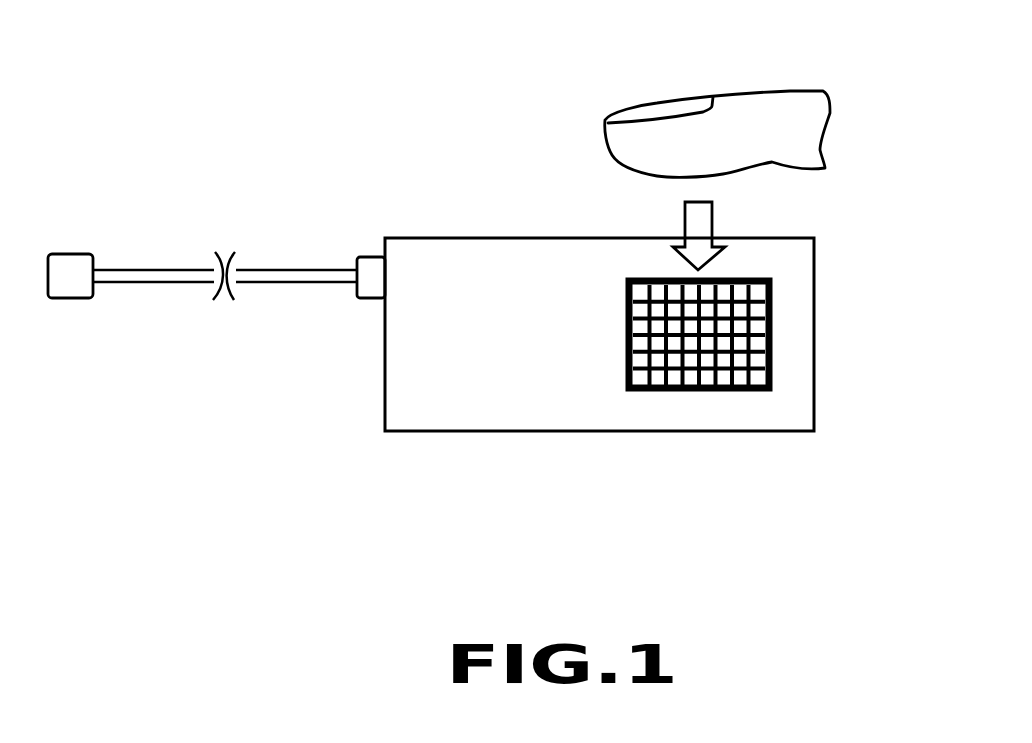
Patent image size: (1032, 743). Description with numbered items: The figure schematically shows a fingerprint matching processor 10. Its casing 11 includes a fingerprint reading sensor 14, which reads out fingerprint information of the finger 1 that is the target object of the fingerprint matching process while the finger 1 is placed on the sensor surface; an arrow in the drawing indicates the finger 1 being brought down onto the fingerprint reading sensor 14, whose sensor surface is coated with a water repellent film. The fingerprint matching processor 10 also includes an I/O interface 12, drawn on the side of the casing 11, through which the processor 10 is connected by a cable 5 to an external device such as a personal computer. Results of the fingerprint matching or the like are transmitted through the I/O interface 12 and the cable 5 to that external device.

The fingerprint matching processor 10 is at (499, 138).
The finger 1 is at (767, 113).
The cable 5 is at (153, 275).
The I/O interface 12 is at (368, 260).
The casing 11 is at (397, 382).
The fingerprint reading sensor 14 is at (759, 308).